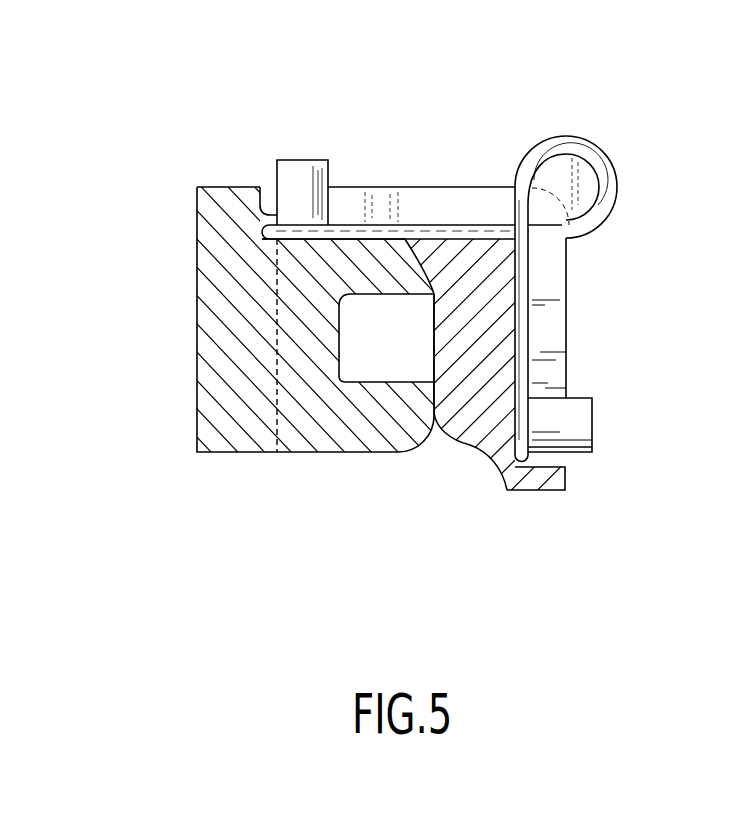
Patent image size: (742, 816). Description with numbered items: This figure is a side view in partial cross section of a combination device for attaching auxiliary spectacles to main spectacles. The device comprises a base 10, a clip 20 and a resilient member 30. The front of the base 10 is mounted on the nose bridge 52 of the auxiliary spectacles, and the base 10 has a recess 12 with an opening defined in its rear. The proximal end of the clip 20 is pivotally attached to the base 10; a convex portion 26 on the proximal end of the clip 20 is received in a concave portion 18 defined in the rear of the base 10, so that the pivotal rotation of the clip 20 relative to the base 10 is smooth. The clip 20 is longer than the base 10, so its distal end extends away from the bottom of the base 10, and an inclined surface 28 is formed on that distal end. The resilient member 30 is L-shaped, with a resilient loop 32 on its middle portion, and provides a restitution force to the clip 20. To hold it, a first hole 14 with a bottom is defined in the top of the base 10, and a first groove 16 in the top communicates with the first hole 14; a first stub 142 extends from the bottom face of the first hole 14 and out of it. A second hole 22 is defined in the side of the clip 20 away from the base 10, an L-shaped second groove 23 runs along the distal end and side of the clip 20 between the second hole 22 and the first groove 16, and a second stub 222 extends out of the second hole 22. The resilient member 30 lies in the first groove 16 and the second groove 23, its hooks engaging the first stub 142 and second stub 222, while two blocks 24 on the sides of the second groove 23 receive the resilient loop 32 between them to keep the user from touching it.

The base 10 is at (368, 432).
The recess 12 is at (372, 372).
The first hole 14 is at (273, 183).
The first stub 142 is at (315, 163).
The first groove 16 is at (383, 190).
The concave portion 18 is at (432, 191).
The clip 20 is at (498, 423).
The second hole 22 is at (565, 460).
The second stub 222 is at (585, 420).
The second groove 23 is at (478, 190).
The blocks 24 is at (565, 137).
The convex portion 26 is at (418, 272).
The inclined surface 28 is at (470, 447).
The resilient member 30 is at (538, 318).
The resilient loop 32 is at (607, 173).
The nose bridge 52 is at (210, 333).